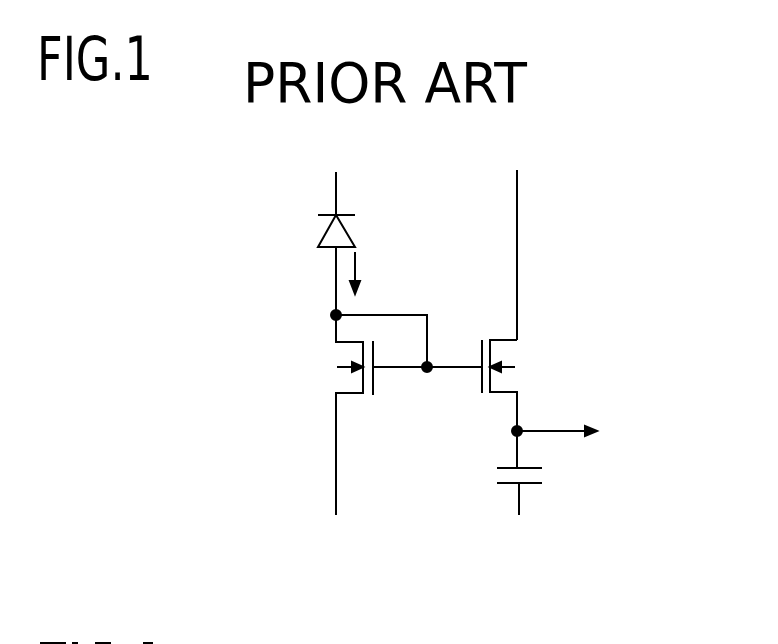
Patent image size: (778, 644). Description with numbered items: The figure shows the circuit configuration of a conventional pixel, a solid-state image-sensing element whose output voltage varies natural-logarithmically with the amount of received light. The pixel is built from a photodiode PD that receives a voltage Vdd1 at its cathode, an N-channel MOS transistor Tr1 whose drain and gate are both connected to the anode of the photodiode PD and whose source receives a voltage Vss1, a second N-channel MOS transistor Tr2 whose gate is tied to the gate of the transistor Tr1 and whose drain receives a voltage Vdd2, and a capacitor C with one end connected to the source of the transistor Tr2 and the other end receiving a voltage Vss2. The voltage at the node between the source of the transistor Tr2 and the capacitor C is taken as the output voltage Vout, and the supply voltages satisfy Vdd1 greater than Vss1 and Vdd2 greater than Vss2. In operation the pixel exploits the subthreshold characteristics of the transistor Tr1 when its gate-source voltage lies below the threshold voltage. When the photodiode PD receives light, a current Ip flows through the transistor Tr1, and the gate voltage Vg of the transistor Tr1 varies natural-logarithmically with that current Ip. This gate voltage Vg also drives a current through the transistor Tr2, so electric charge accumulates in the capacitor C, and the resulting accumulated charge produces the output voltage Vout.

The photodiode PD is at (345, 230).
The N-channel MOS transistor Tr1 is at (357, 415).
The N-channel MOS transistor Tr2 is at (526, 385).
The capacitor C is at (533, 473).
The current Ip is at (372, 273).
The gate voltage Vg is at (406, 356).
The output voltage Vout is at (591, 431).
The voltage Vdd1 is at (346, 173).
The voltage Vdd2 is at (528, 235).
The voltage Vss1 is at (348, 536).
The voltage Vss2 is at (530, 536).